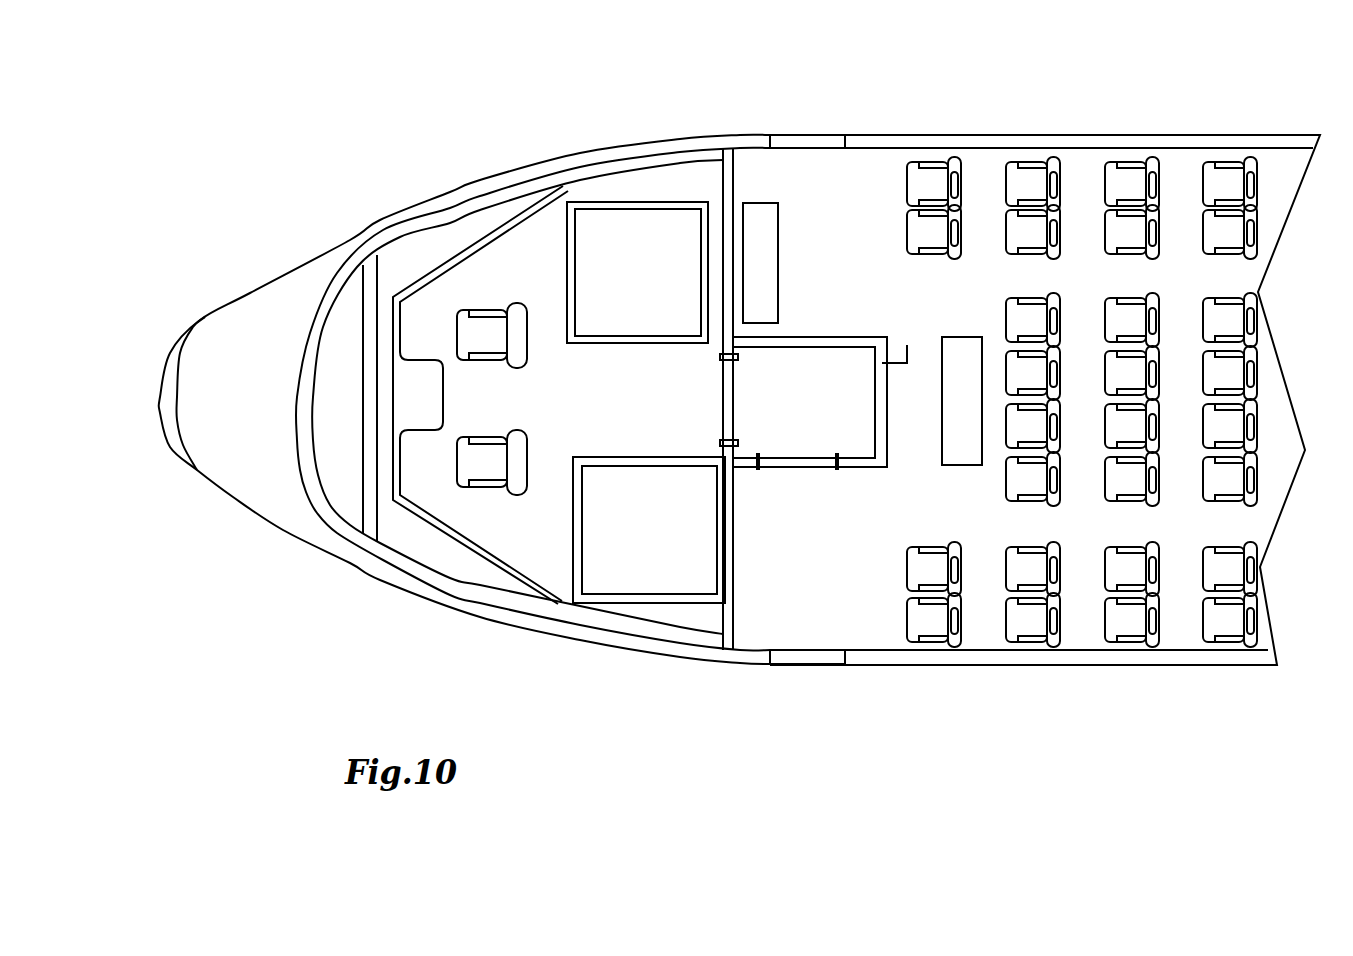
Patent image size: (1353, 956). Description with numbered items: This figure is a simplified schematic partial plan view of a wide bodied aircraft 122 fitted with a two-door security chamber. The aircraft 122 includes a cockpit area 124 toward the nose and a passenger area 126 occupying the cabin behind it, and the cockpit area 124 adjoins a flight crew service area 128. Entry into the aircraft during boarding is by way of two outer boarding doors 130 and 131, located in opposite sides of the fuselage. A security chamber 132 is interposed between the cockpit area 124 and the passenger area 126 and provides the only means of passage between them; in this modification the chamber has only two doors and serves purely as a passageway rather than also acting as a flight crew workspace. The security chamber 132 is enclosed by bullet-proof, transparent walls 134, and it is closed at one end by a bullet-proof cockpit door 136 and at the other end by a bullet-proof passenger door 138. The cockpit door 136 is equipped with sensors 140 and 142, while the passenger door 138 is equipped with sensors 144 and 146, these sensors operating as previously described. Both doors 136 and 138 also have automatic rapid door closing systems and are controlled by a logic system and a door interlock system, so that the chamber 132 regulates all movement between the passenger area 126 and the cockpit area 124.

The wide bodied aircraft 122 is at (1146, 690).
The cockpit area 124 is at (433, 460).
The passenger area 126 is at (1060, 266).
The flight crew service area 128 is at (868, 602).
The outer boarding door 130 is at (803, 664).
The outer boarding door 131 is at (827, 135).
The security chamber 132 is at (862, 401).
The bullet-proof transparent walls 134 is at (907, 345).
The cockpit door 136 is at (722, 387).
The passenger door 138 is at (803, 466).
The sensor 140 is at (722, 446).
The sensor 142 is at (722, 358).
The sensor 144 is at (758, 470).
The sensor 146 is at (838, 470).